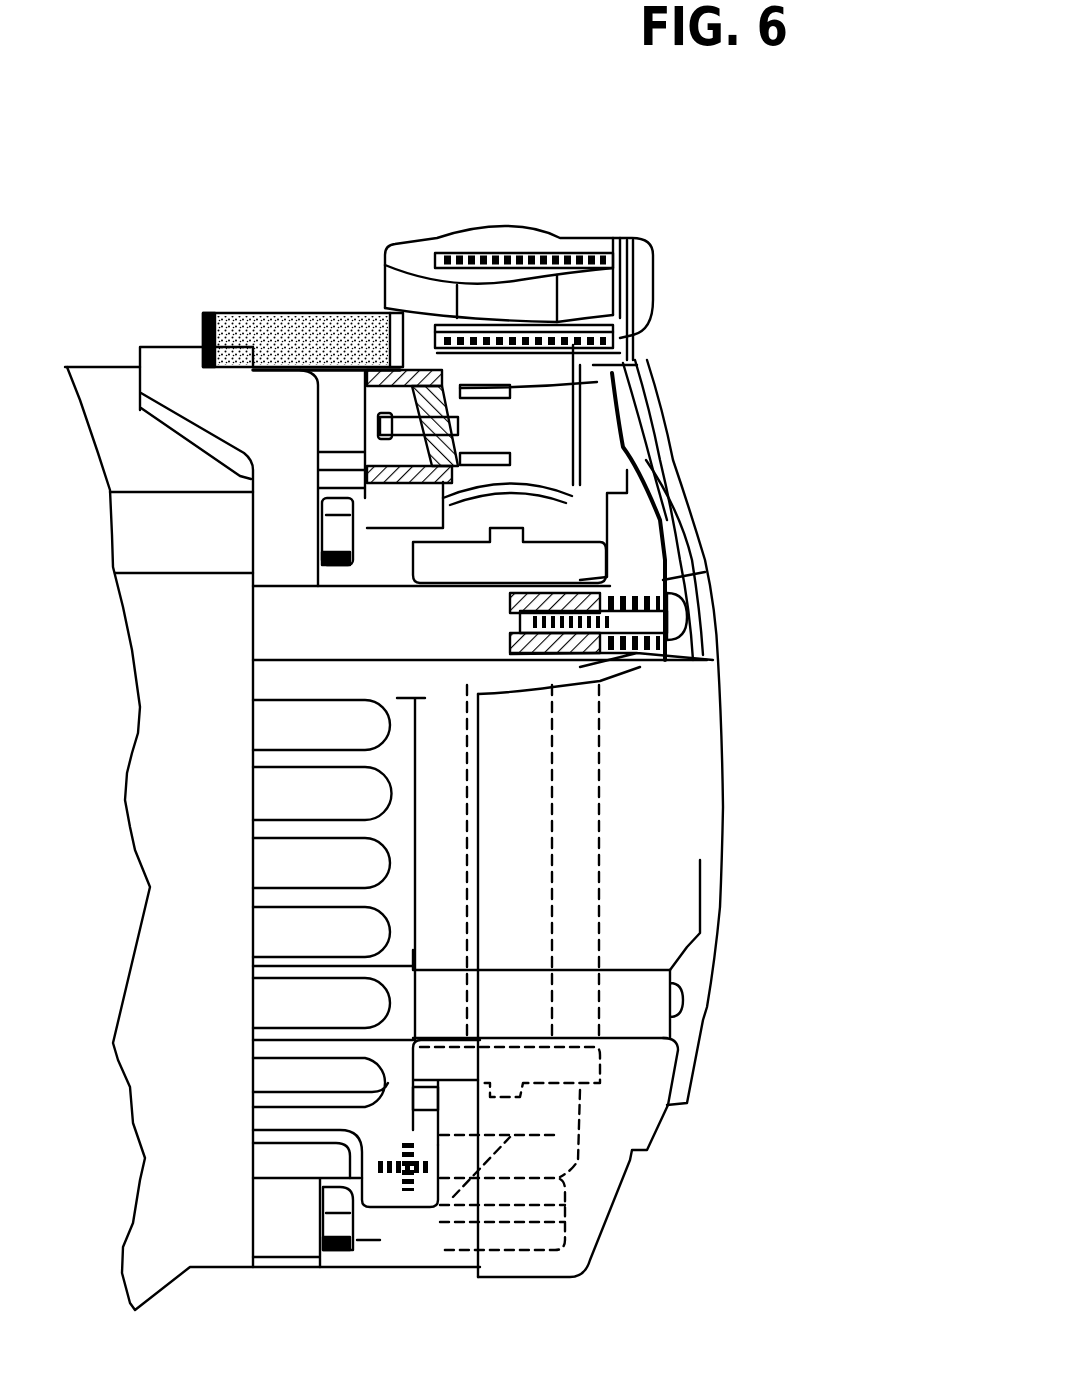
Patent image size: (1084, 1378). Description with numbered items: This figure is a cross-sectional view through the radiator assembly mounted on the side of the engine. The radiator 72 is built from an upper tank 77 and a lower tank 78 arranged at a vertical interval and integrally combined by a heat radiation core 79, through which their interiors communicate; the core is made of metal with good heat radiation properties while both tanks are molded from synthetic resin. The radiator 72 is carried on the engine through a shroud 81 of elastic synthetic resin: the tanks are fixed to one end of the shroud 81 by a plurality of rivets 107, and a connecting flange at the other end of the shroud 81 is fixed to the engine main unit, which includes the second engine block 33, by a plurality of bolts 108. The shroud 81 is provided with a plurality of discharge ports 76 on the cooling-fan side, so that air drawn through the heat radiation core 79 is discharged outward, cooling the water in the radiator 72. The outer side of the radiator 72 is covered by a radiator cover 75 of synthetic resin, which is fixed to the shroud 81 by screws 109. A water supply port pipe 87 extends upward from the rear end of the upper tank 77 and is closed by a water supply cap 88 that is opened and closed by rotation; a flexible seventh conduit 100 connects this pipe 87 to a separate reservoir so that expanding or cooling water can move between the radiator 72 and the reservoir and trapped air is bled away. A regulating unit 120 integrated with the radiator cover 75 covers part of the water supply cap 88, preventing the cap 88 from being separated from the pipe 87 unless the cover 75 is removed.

The second engine block 33 is at (193, 1245).
The radiator 72 is at (612, 560).
The radiator cover 75 is at (700, 850).
The discharge ports 76 is at (280, 700).
The upper tank 77 is at (580, 460).
The lower tank 78 is at (563, 1110).
The heat radiation core 79 is at (560, 915).
The shroud 81 is at (232, 395).
The water supply port pipe 87 is at (595, 367).
The water supply cap 88 is at (412, 262).
The seventh conduit 100 is at (355, 310).
The rivets 107 is at (460, 421).
The bolts 108 is at (345, 545).
The screws 109 is at (665, 620).
The regulating unit 120 is at (585, 240).